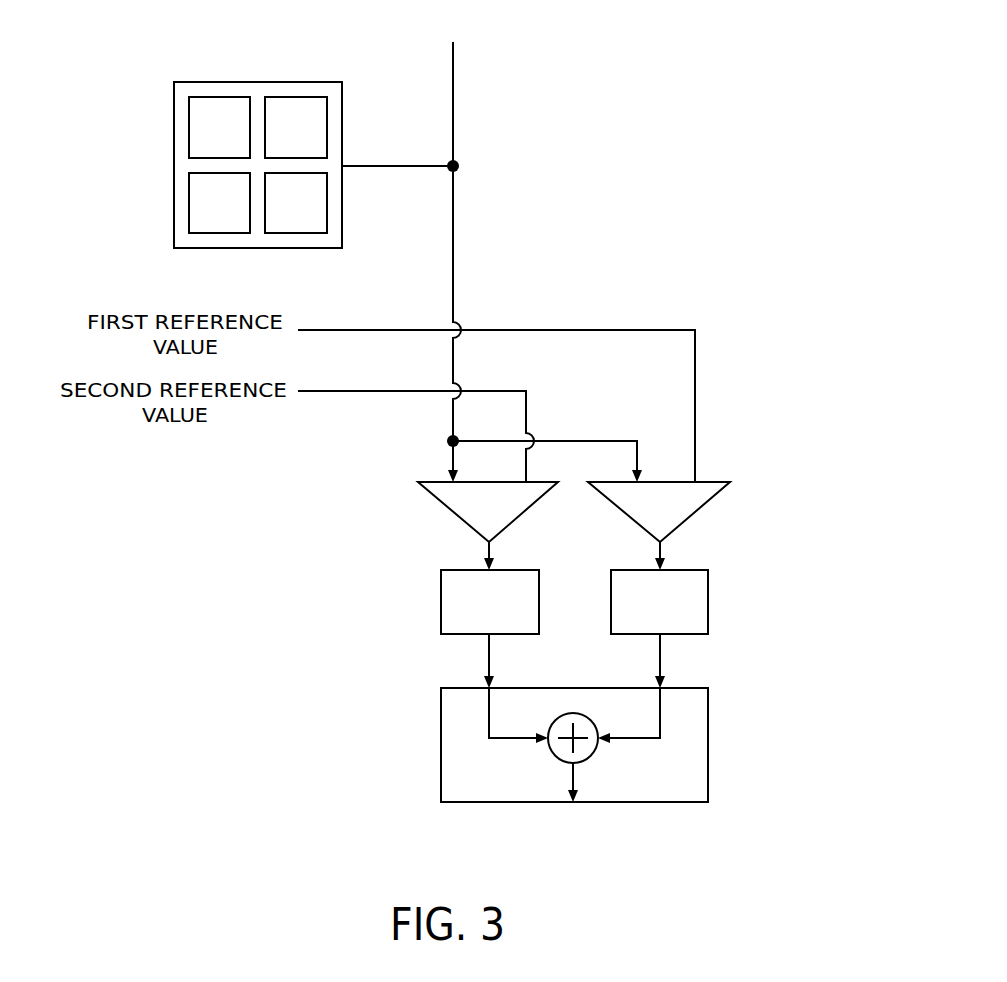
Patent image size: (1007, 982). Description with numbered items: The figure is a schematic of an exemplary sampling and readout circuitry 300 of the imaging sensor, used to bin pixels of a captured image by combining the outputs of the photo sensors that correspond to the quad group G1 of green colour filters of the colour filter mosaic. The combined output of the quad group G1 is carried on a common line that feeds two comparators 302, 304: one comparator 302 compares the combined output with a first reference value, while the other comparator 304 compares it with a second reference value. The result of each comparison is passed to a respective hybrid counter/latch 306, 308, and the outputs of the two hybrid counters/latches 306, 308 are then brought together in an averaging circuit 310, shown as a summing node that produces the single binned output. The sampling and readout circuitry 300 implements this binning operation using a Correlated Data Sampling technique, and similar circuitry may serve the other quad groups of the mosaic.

The sampling and readout circuitry 300 is at (631, 54).
The quad group of green colour filters G1 is at (213, 165).
The comparator 302 is at (694, 526).
The comparator 304 is at (454, 526).
The hybrid counter/latch 306 is at (703, 629).
The hybrid counter/latch 308 is at (449, 629).
The averaging circuit 310 is at (618, 745).